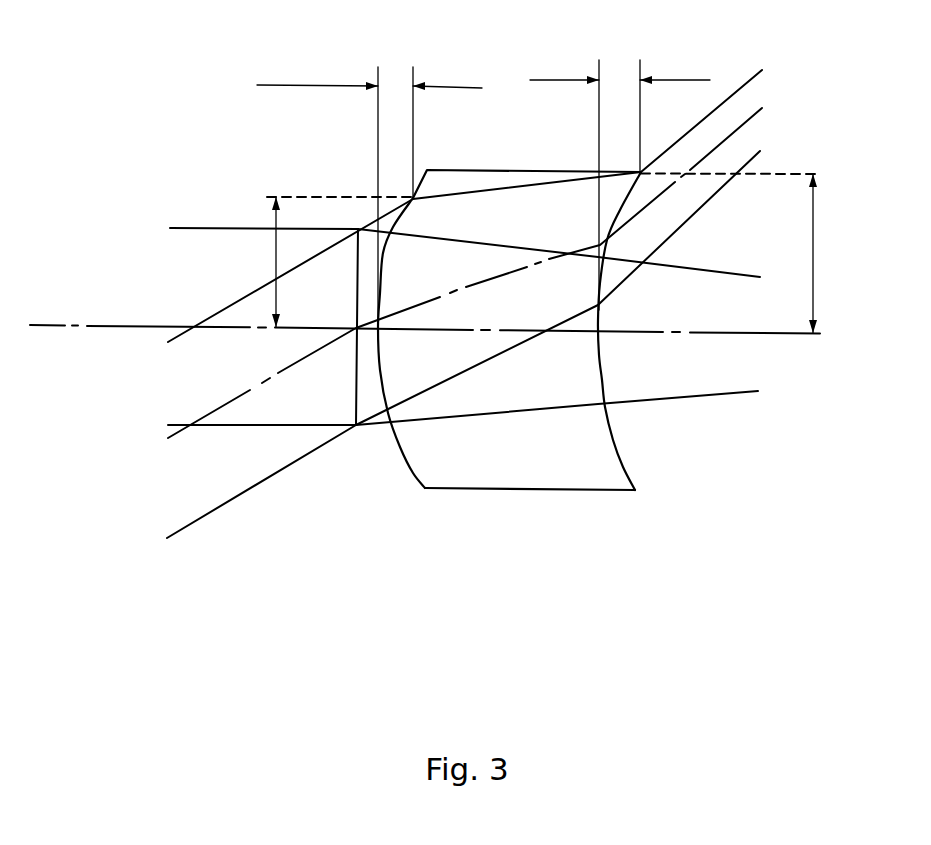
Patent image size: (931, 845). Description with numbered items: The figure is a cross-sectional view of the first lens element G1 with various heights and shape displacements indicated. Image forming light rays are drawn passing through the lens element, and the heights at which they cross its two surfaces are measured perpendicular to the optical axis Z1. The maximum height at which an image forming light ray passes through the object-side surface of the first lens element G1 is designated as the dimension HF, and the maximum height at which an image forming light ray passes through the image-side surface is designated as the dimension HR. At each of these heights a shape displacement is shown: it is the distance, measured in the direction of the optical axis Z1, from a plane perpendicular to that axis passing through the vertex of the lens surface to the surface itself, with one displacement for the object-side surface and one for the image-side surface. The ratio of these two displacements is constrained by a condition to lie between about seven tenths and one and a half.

The first lens element G1 is at (533, 478).
The optical axis Z1 is at (87, 327).
The maximum object-side ray height HF is at (327, 262).
The maximum image-side ray height HR is at (744, 254).